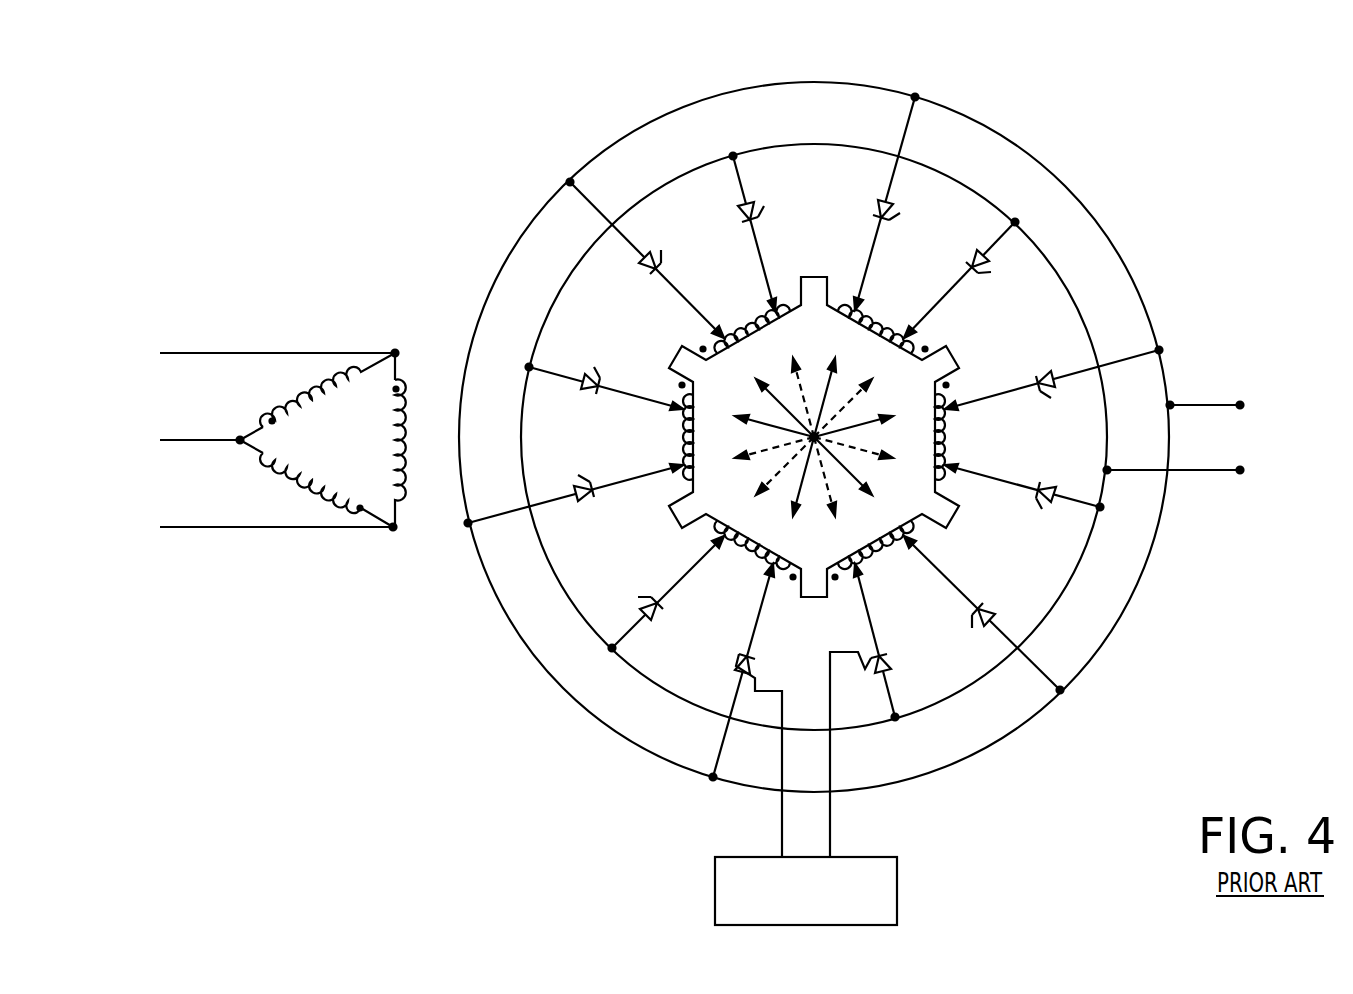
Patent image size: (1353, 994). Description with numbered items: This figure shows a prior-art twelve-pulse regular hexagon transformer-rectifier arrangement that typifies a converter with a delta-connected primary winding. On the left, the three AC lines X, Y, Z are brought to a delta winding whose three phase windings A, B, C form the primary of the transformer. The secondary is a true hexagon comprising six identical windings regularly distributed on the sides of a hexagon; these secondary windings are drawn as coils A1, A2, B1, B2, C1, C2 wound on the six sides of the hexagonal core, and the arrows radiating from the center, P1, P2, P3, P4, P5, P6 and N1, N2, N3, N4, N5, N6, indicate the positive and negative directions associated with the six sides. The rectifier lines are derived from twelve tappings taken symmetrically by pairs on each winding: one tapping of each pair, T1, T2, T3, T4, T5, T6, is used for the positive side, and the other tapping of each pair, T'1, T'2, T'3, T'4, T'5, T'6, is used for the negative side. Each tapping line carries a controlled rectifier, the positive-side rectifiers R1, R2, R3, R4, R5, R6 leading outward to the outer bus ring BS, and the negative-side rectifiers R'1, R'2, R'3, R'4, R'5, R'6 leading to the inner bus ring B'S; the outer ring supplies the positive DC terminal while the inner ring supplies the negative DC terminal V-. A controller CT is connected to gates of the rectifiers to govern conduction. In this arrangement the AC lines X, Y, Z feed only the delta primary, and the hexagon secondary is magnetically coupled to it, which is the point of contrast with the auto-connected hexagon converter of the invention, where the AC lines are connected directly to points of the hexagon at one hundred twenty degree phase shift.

The outer bus ring BS is at (473, 557).
The inner bus ring B'S is at (795, 437).
The stator coil A1 is at (742, 326).
The stator coil A2 is at (876, 560).
The stator coil B1 is at (955, 440).
The stator coil B2 is at (672, 450).
The stator coil C1 is at (760, 570).
The stator coil C2 is at (870, 315).
The thyristor R1 is at (658, 256).
The thyristor R'1 is at (764, 232).
The thyristor R2 is at (900, 215).
The thyristor R'2 is at (961, 279).
The thyristor R3 is at (1051, 398).
The thyristor R'3 is at (1024, 512).
The thyristor R4 is at (988, 604).
The thyristor R'4 is at (884, 710).
The thyristor R5 is at (734, 669).
The thyristor R'5 is at (662, 594).
The thyristor R6 is at (576, 484).
The thyristor R'6 is at (605, 369).
The tapping T1 is at (720, 335).
The tapping T'1 is at (774, 281).
The tapping T2 is at (855, 304).
The tapping T'2 is at (930, 328).
The tapping T3 is at (950, 408).
The tapping T'3 is at (967, 488).
The tapping T4 is at (908, 538).
The tapping T'4 is at (849, 594).
The tapping T5 is at (775, 570).
The tapping T'5 is at (693, 550).
The tapping T6 is at (680, 468).
The tapping T'6 is at (652, 385).
The positive flux vector P1 is at (774, 396).
The positive flux vector P2 is at (836, 383).
The positive flux vector P3 is at (871, 419).
The positive flux vector P4 is at (856, 478).
The positive flux vector P5 is at (796, 489).
The positive flux vector P6 is at (761, 445).
The negative flux vector N1 is at (794, 383).
The negative flux vector N2 is at (855, 395).
The negative flux vector N3 is at (872, 456).
The negative flux vector N4 is at (835, 489).
The negative flux vector N5 is at (771, 478).
The negative flux vector N6 is at (761, 430).
The negative supply terminal V- is at (1191, 470).
The controller CT is at (897, 888).
The AC line X is at (263, 355).
The AC line Y is at (185, 440).
The AC line Z is at (262, 527).
The delta winding point A is at (300, 392).
The delta winding point B is at (412, 440).
The delta winding point C is at (290, 496).